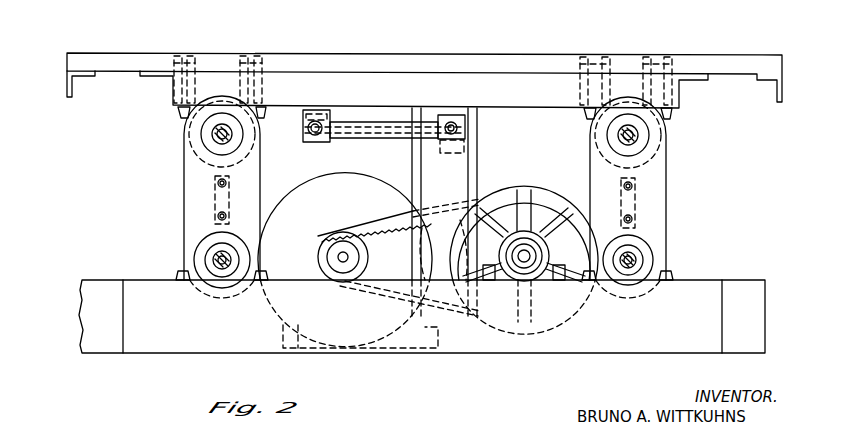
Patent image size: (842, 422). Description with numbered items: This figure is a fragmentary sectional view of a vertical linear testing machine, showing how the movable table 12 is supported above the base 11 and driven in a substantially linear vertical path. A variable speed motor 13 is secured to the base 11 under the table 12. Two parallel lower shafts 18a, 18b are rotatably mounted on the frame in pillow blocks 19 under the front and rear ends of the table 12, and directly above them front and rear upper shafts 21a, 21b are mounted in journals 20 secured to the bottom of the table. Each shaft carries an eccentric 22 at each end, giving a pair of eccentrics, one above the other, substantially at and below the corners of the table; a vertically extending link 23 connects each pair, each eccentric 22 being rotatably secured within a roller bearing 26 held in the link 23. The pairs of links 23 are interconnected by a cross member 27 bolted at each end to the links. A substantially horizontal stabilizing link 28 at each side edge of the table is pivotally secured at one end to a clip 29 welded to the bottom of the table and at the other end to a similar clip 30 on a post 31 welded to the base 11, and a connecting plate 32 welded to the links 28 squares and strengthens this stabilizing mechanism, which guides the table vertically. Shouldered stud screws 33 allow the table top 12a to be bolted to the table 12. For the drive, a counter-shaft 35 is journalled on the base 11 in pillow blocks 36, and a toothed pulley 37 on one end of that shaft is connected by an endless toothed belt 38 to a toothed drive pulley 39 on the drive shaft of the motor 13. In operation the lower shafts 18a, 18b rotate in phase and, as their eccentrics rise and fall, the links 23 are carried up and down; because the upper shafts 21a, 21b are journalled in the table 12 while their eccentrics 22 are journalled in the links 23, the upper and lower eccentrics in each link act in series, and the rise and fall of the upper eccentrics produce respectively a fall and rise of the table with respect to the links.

The base 11 is at (470, 352).
The movable table 12 is at (174, 108).
The table top 12a is at (128, 65).
The variable speed motor 13 is at (323, 184).
The lower shaft 18a is at (218, 264).
The lower shaft 18b is at (630, 265).
The pillow block 19 is at (178, 273).
The journal 20 is at (186, 118).
The upper shaft 21a is at (216, 138).
The upper shaft 21b is at (634, 141).
The eccentric 22 is at (223, 124).
The link 23 is at (186, 196).
The roller bearing 26 is at (242, 136).
The cross member 27 is at (231, 181).
The stabilizing link 28 is at (360, 121).
The clip 29 is at (330, 142).
The clip 30 is at (466, 124).
The post 31 is at (478, 152).
The connecting plate 32 is at (398, 127).
The shouldered stud screw 33 is at (252, 50).
The counter-shaft 35 is at (527, 254).
The pillow block 36 is at (554, 266).
The toothed pulley 37 is at (528, 200).
The endless toothed belt 38 is at (470, 212).
The toothed drive pulley 39 is at (326, 244).